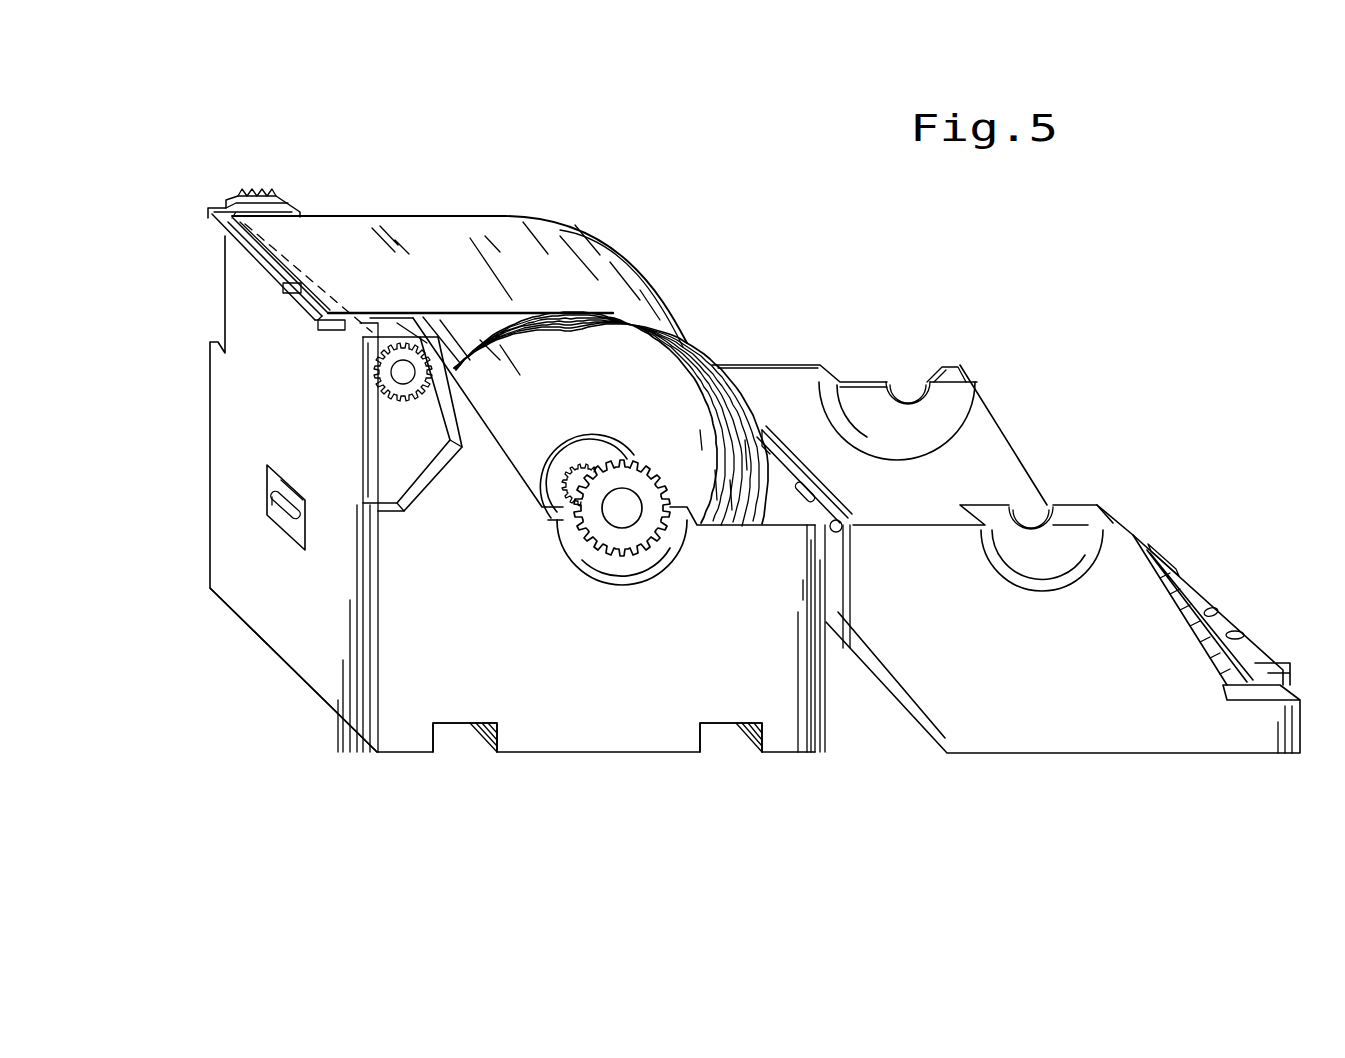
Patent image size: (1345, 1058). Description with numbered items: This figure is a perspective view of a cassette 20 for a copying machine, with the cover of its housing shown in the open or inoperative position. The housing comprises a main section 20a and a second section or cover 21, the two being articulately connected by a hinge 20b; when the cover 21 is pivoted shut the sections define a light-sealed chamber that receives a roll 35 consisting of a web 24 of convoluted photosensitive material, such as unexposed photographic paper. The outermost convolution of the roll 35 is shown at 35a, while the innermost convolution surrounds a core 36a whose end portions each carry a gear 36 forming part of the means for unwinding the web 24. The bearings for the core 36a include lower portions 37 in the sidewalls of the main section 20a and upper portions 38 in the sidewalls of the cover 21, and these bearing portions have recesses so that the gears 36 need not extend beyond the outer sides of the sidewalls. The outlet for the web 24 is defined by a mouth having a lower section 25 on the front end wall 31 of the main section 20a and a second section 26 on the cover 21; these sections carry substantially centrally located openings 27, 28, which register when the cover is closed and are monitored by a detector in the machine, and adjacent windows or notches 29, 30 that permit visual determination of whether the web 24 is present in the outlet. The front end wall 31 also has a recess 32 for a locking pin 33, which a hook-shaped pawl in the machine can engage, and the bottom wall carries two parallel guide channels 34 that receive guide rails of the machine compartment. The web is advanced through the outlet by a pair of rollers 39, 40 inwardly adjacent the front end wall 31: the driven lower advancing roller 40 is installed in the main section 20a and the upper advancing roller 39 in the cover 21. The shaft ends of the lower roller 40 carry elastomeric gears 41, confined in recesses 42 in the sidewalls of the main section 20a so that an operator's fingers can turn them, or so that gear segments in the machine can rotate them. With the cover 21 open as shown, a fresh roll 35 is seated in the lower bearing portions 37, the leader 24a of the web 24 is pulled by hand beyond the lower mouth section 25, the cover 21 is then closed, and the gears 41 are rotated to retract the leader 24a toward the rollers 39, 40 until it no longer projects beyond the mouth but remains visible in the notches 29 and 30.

The cassette 20 is at (716, 290).
The main section 20a is at (542, 657).
The hinge 20b is at (833, 504).
The cover 21 is at (1003, 677).
The web 24 is at (344, 220).
The leader 24a is at (221, 236).
The lower section of the mouth 25 is at (214, 222).
The second section of the mouth 26 is at (1214, 574).
The opening 27 is at (265, 266).
The opening 28 is at (1225, 613).
The window 29 is at (280, 291).
The window 30 is at (1254, 638).
The front end wall 31 is at (293, 641).
The recess 32 is at (252, 492).
The locking pin 33 is at (295, 522).
The guide channels 34 is at (470, 748).
The roll 35 is at (613, 405).
The outermost convolution 35a is at (736, 372).
The gear 36 is at (665, 467).
The core 36a is at (567, 465).
The lower bearing portions 37 is at (663, 568).
The upper bearing portions 38 is at (898, 384).
The upper advancing roller 39 is at (1192, 666).
The lower advancing roller 40 is at (406, 313).
The gears 41 is at (360, 376).
The recesses 42 is at (201, 345).